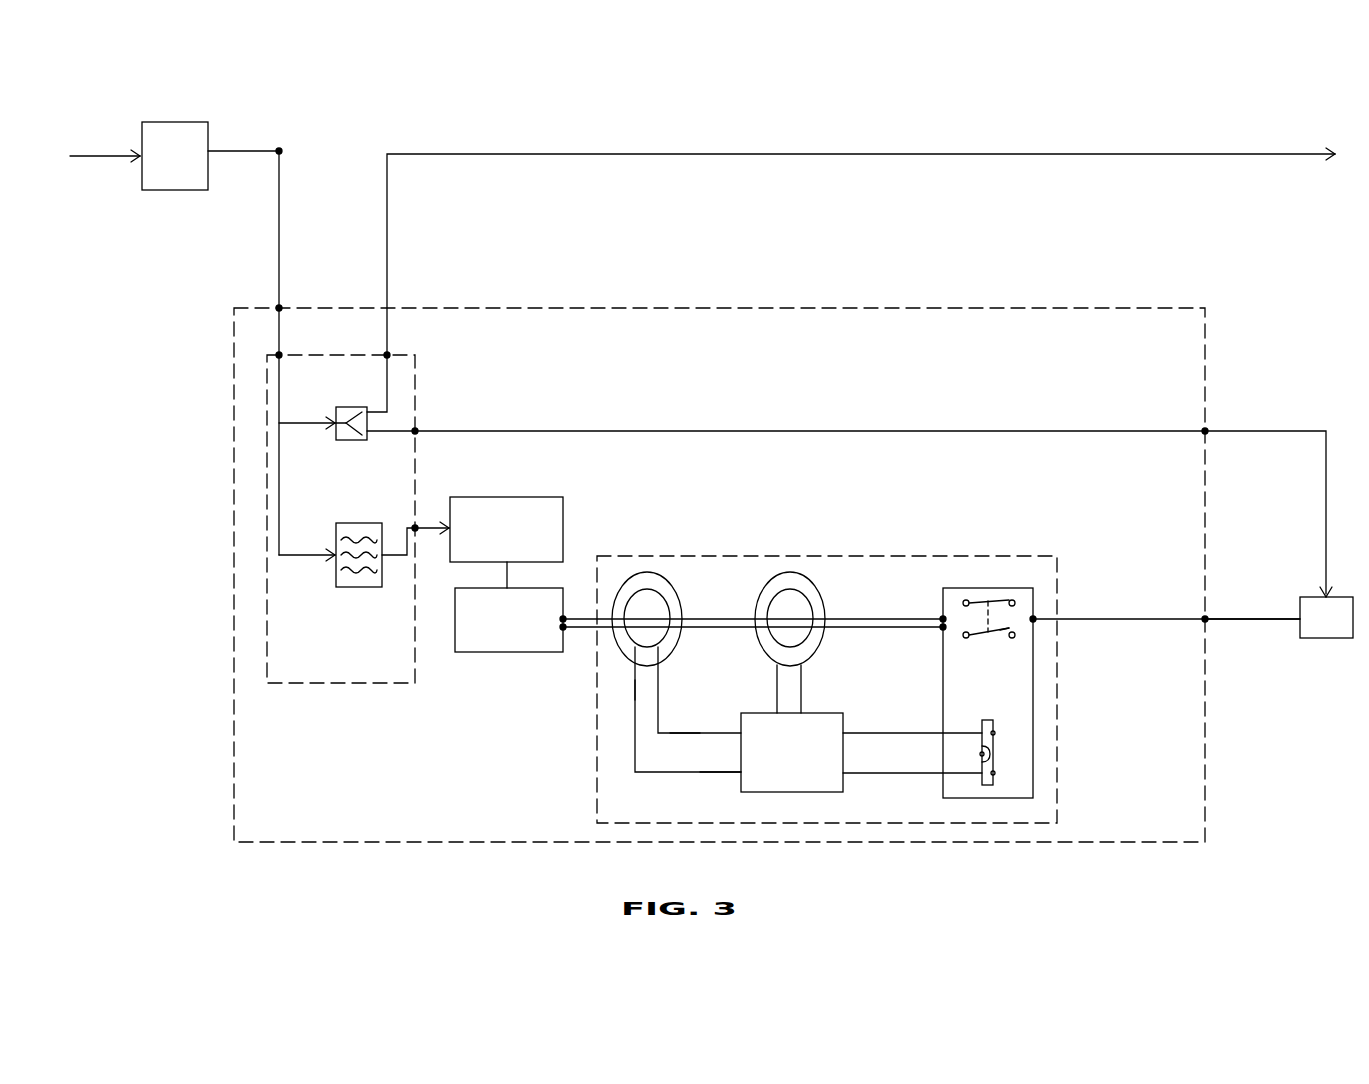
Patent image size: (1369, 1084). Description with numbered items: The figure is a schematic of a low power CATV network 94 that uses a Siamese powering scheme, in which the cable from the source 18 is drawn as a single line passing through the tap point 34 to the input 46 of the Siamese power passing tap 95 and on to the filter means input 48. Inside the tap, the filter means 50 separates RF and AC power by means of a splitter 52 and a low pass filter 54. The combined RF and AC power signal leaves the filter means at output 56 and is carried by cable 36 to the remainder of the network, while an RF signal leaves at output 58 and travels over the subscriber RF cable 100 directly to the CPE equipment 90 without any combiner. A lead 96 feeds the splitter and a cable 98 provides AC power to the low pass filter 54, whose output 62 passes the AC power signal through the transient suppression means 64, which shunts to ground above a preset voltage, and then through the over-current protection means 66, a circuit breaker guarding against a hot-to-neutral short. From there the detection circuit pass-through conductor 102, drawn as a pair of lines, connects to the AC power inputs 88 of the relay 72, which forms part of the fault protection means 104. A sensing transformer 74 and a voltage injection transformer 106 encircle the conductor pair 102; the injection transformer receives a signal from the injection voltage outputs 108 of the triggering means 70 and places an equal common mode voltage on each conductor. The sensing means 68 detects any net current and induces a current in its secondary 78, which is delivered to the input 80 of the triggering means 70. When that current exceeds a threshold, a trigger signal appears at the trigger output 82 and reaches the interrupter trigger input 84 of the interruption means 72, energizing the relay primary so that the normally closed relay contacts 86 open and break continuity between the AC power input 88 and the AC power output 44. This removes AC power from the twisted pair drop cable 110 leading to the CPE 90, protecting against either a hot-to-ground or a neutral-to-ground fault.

The source 18 is at (195, 122).
The tap point 34 is at (281, 148).
The cable 36 is at (538, 153).
The low power CATV network 94 is at (726, 133).
The input 46 is at (299, 292).
The filter means input 48 is at (291, 351).
The filter means 50 is at (410, 353).
The output 56 is at (382, 362).
The splitter 52 is at (343, 441).
The input line to arrestor 96 is at (290, 430).
The output 58 is at (420, 416).
The subscriber RF cable 100 is at (820, 431).
The low pass filter 54 is at (352, 588).
The cable 98 is at (290, 560).
The output 62 is at (420, 517).
The transient suppression means 64 is at (470, 497).
The over-current protection means 66 is at (527, 652).
The fault protection means 104 is at (765, 555).
The detection circuit pass-through conductor 102 is at (885, 617).
The sensing transformer 74 is at (683, 612).
The voltage injection transformer 106 is at (826, 612).
The sensing means 68 is at (670, 675).
The secondary 78 is at (635, 690).
The injection voltage outputs 108 is at (682, 733).
The triggering means 70 is at (826, 713).
The input 80 is at (732, 781).
The trigger output 82 is at (853, 753).
The interruption means 72 is at (942, 640).
The AC power input 88 is at (952, 606).
The relay contacts 86 is at (1011, 644).
The AC power output 44 is at (1035, 624).
The interrupter trigger input 84 is at (949, 754).
The twisted pair drop cable 110 is at (1283, 618).
The CPE equipment 90 is at (1313, 638).
The Siamese power passing tap 95 is at (512, 307).